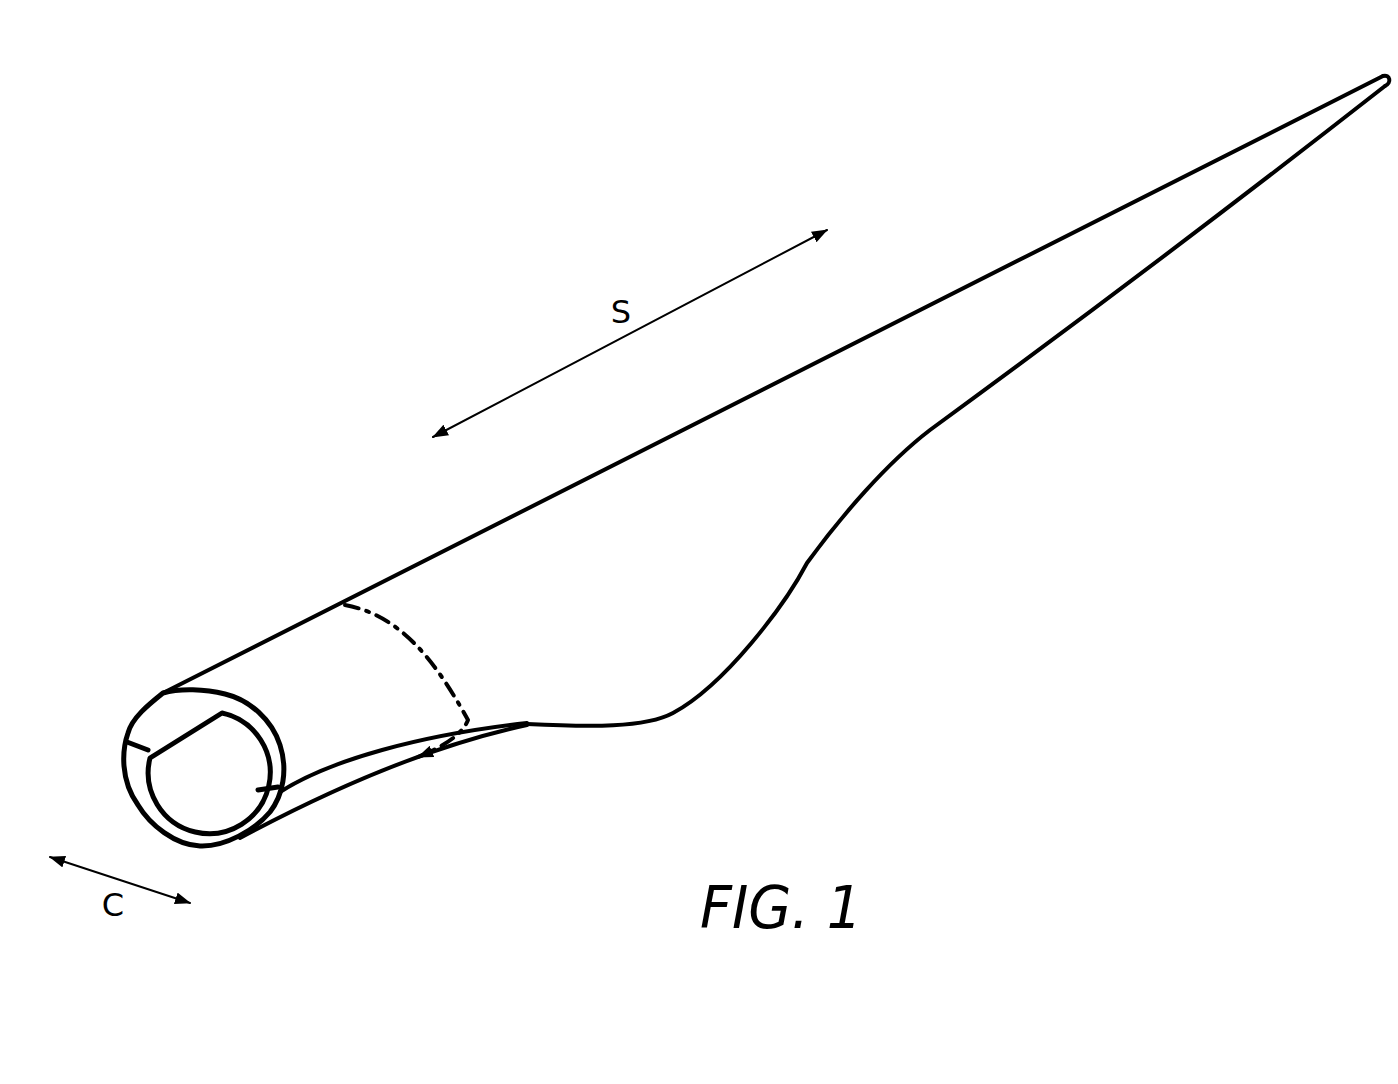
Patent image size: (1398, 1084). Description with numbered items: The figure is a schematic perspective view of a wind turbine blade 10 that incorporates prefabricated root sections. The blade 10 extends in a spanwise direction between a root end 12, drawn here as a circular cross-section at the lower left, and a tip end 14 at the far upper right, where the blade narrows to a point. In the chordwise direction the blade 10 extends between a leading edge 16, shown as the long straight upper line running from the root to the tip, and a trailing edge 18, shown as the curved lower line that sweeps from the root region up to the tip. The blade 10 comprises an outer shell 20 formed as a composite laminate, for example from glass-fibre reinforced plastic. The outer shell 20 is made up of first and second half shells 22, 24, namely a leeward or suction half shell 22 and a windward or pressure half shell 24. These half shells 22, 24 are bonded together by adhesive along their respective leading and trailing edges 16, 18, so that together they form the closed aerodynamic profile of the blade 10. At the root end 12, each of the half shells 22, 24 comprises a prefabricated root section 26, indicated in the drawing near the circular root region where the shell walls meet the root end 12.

The wind turbine blade 10 is at (356, 270).
The root end 12 is at (144, 680).
The tip end 14 is at (1379, 118).
The leading edge 16 is at (389, 570).
The trailing edge 18 is at (860, 498).
The outer shell 20 is at (660, 485).
The first half shell 22 is at (687, 637).
The second half shell 24 is at (447, 740).
The prefabricated root section 26 is at (285, 660).